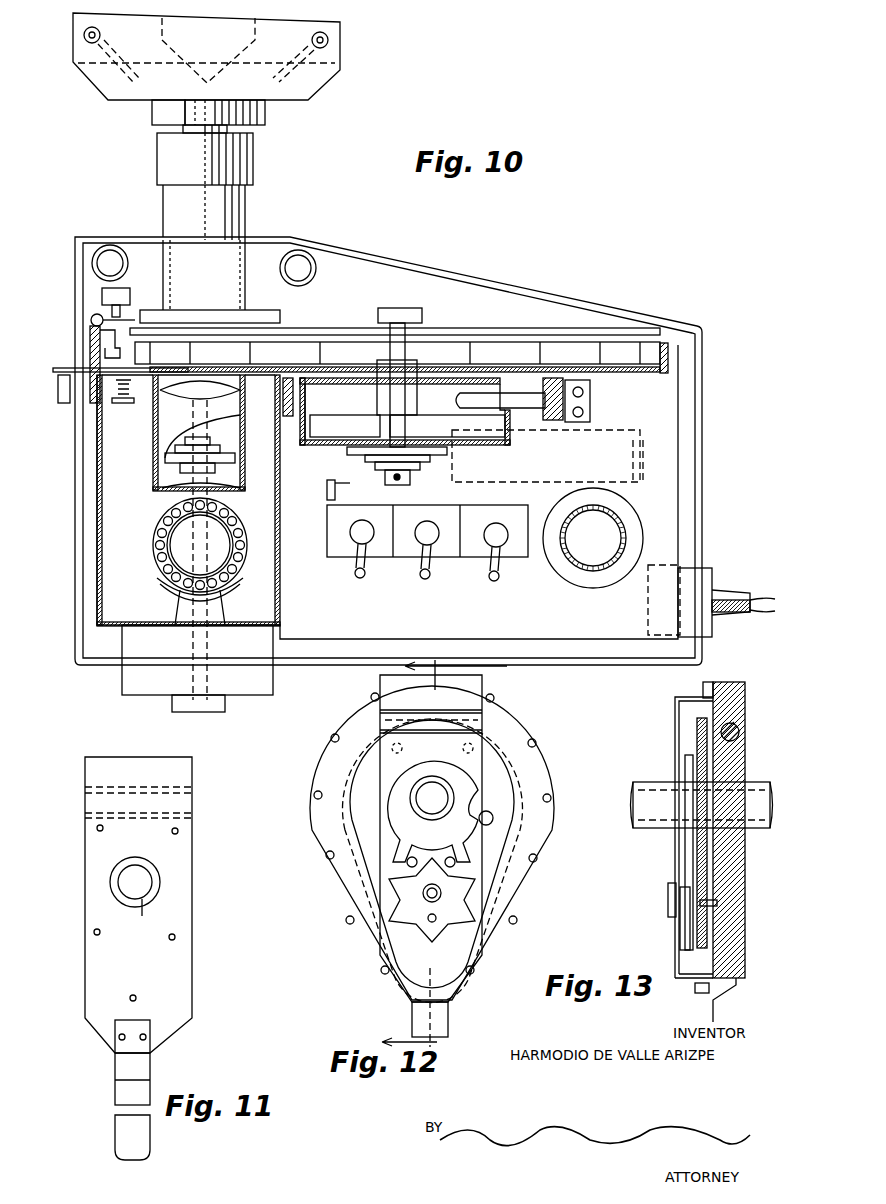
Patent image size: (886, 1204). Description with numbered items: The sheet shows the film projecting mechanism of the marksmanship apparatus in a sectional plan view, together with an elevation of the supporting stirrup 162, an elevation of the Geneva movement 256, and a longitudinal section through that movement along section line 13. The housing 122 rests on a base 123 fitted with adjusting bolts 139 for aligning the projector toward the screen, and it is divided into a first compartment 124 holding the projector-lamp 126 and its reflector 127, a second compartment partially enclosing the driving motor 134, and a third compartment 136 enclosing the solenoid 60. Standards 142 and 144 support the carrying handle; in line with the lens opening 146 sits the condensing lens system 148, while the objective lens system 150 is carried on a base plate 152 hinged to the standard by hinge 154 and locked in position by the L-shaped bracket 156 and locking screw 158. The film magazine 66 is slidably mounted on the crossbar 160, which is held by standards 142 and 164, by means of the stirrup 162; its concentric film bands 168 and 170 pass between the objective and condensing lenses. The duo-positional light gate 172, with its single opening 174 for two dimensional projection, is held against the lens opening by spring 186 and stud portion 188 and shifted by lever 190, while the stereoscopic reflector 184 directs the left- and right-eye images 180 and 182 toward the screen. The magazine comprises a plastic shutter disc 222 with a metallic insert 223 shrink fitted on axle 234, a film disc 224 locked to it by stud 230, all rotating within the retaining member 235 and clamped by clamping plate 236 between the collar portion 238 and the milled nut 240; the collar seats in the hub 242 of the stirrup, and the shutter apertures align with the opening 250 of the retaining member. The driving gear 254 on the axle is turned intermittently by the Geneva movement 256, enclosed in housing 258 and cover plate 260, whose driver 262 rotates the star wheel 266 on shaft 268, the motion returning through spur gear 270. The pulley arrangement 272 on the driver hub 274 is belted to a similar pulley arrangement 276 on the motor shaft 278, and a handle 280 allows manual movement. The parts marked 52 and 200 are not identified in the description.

In FIG. 10, the section line 13— 13 is at (456, 675).
In FIG. 12, the section line 13— 13 is at (431, 1040).
In FIG. 10, the frame member 52 is at (343, 368).
In FIG. 10, the solenoid 60 is at (543, 478).
In FIG. 10, the film magazine 66 is at (667, 350).
In FIG. 10, the housing 122 is at (100, 593).
In FIG. 10, the base 123 is at (627, 318).
In FIG. 10, the first compartment 124 is at (97, 527).
In FIG. 10, the projector-lamp 126 is at (180, 536).
In FIG. 10, the reflector 127 is at (160, 588).
In FIG. 10, the driving motor 134 is at (255, 662).
In FIG. 10, the third compartment 136 is at (665, 503).
In FIG. 10, the adjusting bolts 139 is at (113, 246).
In FIG. 10, the standard 142 is at (273, 404).
In FIG. 10, the standard 144 is at (90, 345).
In FIG. 10, the lens opening 146 is at (200, 392).
In FIG. 10, the optical condensing lens system 148 is at (157, 444).
In FIG. 10, the optical objective lens system 150 is at (245, 204).
In FIG. 10, the base plate 152 is at (327, 324).
In FIG. 10, the hinge 154 is at (91, 320).
In FIG. 10, the L-shaped bracket 156 is at (105, 355).
In FIG. 10, the locking screw 158 is at (102, 296).
In FIG. 10, the crossbar 160 is at (528, 410).
In FIG. 10, the stirrup 162 is at (446, 406).
In FIG. 11, the stirrup 162 is at (192, 868).
In FIG. 12, the stirrup 162 is at (455, 993).
In FIG. 13, the stirrup 162 is at (745, 696).
In FIG. 10, the standard 164 is at (565, 420).
In FIG. 10, the film band 168 is at (627, 349).
In FIG. 10, the film band 170 is at (587, 353).
In FIG. 10, the duo-positional light gate 172 is at (155, 392).
In FIG. 10, the opening 174 is at (242, 398).
In FIG. 10, the left-eye image 180 is at (152, 113).
In FIG. 10, the right-eye image 182 is at (265, 111).
In FIG. 10, the stereoscopic reflector 184 is at (343, 58).
In FIG. 10, the spring 186 is at (117, 395).
In FIG. 10, the stud portion 188 is at (120, 402).
In FIG. 10, the lever 190 is at (55, 372).
In FIG. 11, the electrical connector 200 is at (148, 1067).
In FIG. 12, the electrical connector 200 is at (438, 1022).
In FIG. 13, the electrical connector 200 is at (723, 990).
In FIG. 10, the shutter disc 222 is at (692, 347).
In FIG. 10, the metallic insert 223 is at (530, 355).
In FIG. 10, the film disc 224 is at (573, 343).
In FIG. 10, the stud 230 is at (270, 348).
In FIG. 10, the axle 234 is at (413, 340).
In FIG. 11, the axle 234 is at (143, 887).
In FIG. 13, the axle 234 is at (637, 797).
In FIG. 10, the retaining member 235 is at (692, 358).
In FIG. 10, the clamping plate 236 is at (495, 341).
In FIG. 10, the collar portion 238 is at (400, 371).
In FIG. 11, the collar portion 238 is at (136, 919).
In FIG. 10, the milled nut 240 is at (411, 313).
In FIG. 10, the hub 242 is at (420, 377).
In FIG. 11, the hub 242 is at (160, 842).
In FIG. 10, the opening 250 is at (213, 365).
In FIG. 10, the driving gear 254 is at (477, 434).
In FIG. 13, the driving gear 254 is at (708, 765).
In FIG. 12, the Geneva movement 256 is at (364, 995).
In FIG. 13, the Geneva movement 256 is at (660, 733).
In FIG. 10, the housing 258 is at (503, 445).
In FIG. 12, the housing 258 is at (503, 730).
In FIG. 13, the housing 258 is at (675, 748).
In FIG. 10, the cover plate 260 is at (502, 441).
In FIG. 12, the cover plate 260 is at (537, 733).
In FIG. 13, the cover plate 260 is at (727, 690).
In FIG. 10, the driver 262 is at (378, 429).
In FIG. 12, the driver 262 is at (455, 748).
In FIG. 13, the driver 262 is at (690, 838).
In FIG. 12, the star wheel 266 is at (462, 912).
In FIG. 13, the star wheel 266 is at (683, 932).
In FIG. 12, the shaft 268 is at (427, 897).
In FIG. 13, the shaft 268 is at (717, 902).
In FIG. 13, the spur gear 270 is at (707, 917).
In FIG. 10, the pulley arrangement 272 is at (403, 475).
In FIG. 12, the hub 274 is at (455, 797).
In FIG. 13, the hub 274 is at (680, 810).
In FIG. 10, the pulley arrangement 276 is at (175, 460).
In FIG. 10, the motor shaft 278 is at (195, 714).
In FIG. 10, the handle 280 is at (327, 490).